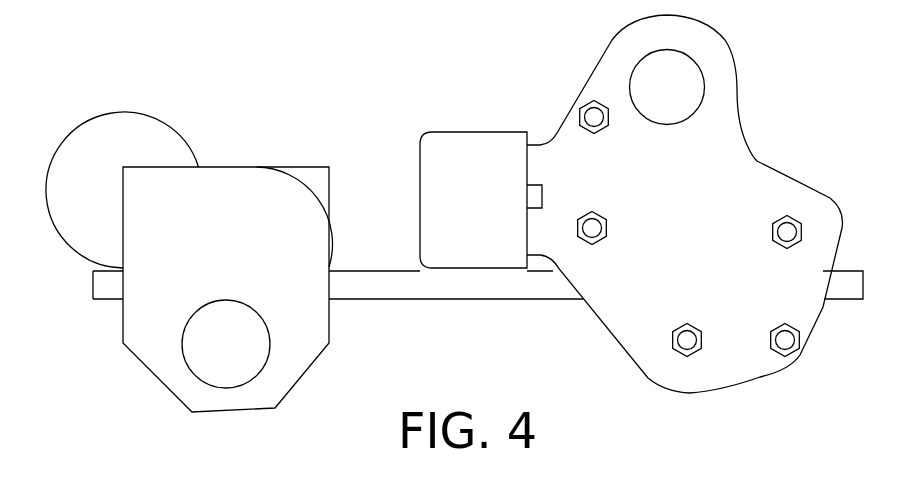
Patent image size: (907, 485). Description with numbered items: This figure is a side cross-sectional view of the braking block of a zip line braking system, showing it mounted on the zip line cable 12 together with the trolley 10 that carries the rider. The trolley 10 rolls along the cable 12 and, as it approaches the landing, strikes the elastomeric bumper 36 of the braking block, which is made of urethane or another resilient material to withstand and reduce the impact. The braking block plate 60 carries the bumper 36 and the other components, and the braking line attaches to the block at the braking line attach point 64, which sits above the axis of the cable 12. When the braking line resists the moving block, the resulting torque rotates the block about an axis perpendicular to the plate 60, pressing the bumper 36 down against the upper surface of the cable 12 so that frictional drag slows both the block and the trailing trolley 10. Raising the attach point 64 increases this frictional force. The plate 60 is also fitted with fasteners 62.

The trolley 10 is at (227, 167).
The zip line cable 12 is at (475, 287).
The elastomeric bumper 36 is at (477, 131).
The braking block plate 60 is at (755, 157).
The hex nuts 62 is at (688, 340).
The braking line attach point 64 is at (680, 75).